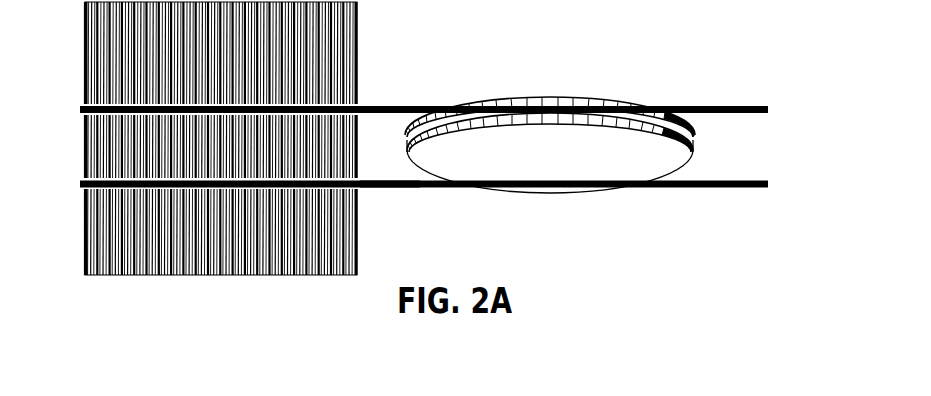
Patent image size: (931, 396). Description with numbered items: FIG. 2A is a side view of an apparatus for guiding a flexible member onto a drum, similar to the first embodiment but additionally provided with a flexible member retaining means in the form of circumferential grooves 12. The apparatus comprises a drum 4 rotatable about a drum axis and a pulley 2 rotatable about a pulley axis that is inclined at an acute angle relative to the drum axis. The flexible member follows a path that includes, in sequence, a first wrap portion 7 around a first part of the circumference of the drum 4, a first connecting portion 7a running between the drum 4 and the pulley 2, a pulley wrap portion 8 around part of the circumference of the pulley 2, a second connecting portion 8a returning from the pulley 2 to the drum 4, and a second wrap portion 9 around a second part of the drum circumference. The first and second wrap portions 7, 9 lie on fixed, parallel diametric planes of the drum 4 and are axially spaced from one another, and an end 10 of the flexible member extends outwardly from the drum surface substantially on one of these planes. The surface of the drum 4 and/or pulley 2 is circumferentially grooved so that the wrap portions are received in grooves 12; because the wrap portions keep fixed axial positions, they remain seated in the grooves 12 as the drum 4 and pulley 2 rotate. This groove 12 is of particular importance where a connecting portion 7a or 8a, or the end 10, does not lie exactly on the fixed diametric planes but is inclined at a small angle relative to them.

The pulley 2 is at (591, 167).
The drum 4 is at (91, 259).
The first wrap portion 7 is at (80, 109).
The first connecting portion 7a is at (392, 105).
The pulley wrap portion 8 is at (697, 143).
The second connecting portion 8a is at (395, 188).
The second wrap portion 9 is at (80, 184).
The end of the flexible member 10 is at (752, 105).
The circumferential groove 12 is at (128, 100).